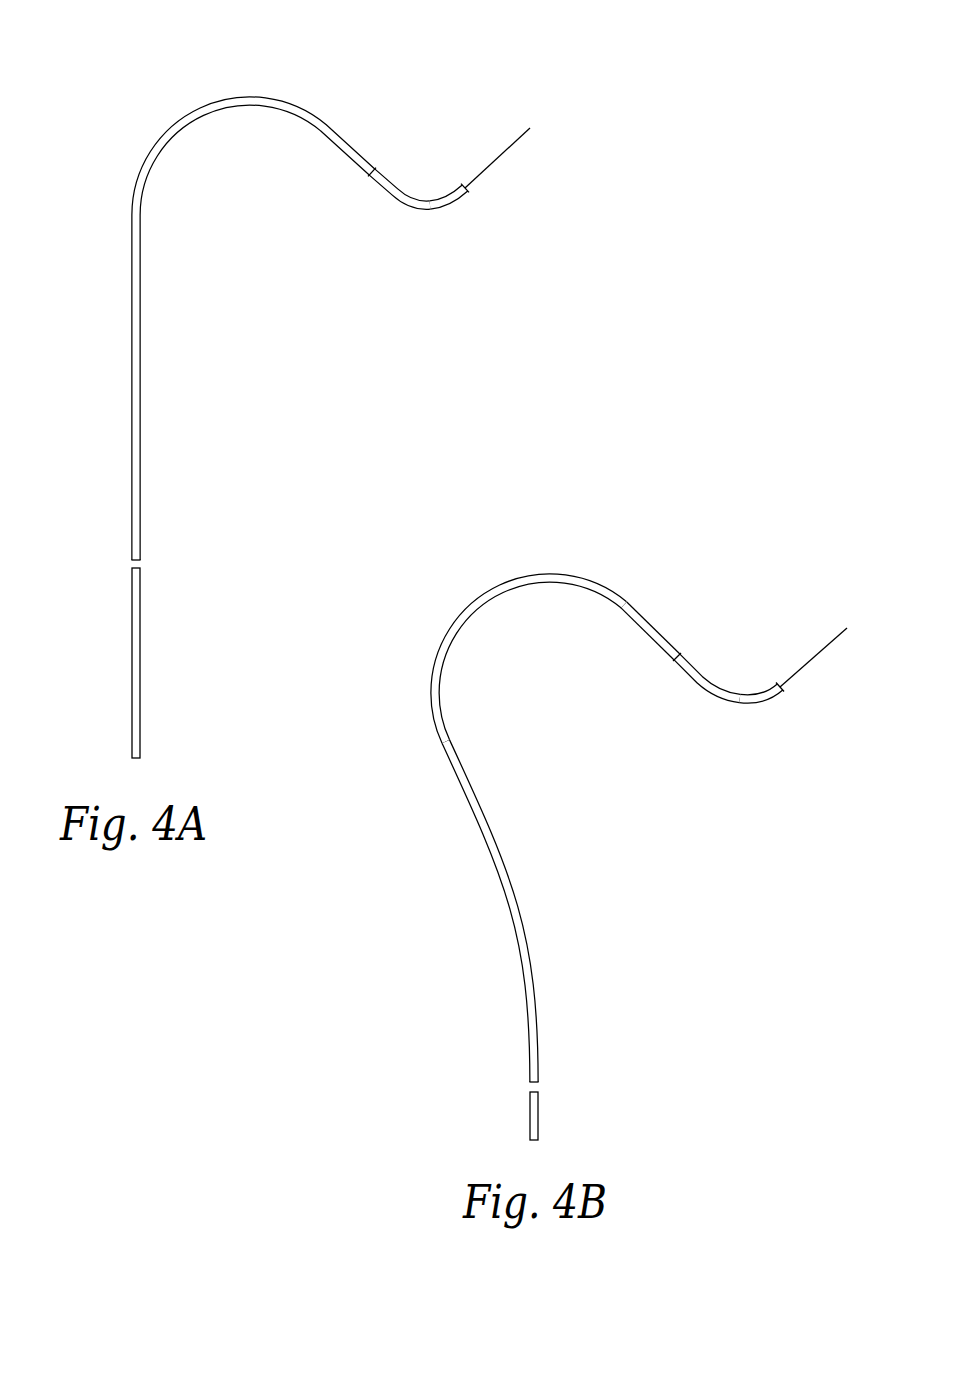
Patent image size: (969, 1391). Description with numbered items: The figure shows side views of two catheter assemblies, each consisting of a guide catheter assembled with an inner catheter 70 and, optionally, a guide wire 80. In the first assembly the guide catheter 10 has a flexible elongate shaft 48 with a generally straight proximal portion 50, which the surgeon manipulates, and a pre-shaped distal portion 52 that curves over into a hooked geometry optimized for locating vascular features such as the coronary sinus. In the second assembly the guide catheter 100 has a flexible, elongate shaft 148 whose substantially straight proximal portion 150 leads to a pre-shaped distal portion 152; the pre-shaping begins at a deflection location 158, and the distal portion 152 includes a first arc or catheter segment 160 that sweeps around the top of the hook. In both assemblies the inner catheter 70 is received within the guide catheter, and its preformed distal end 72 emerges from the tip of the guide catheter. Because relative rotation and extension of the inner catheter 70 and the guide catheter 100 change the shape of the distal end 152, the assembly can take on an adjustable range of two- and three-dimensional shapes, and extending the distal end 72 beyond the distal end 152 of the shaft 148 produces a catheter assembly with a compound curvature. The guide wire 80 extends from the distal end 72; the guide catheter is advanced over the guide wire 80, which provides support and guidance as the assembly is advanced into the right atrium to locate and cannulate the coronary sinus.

In FIG. 4A, the catheter 10 is at (282, 384).
In FIG. 4A, the flexible elongate shaft 48 is at (88, 387).
In FIG. 4A, the proximal portion 50 is at (131, 651).
In FIG. 4A, the distal portion 52 is at (131, 319).
In FIG. 4A, the inner catheter 70 is at (410, 206).
In FIG. 4B, the inner catheter 70 is at (722, 704).
In FIG. 4A, the preformed distal end 72 is at (452, 206).
In FIG. 4B, the preformed distal end 72 is at (766, 704).
In FIG. 4A, the guide wire 80 is at (500, 158).
In FIG. 4B, the guide wire 80 is at (816, 658).
In FIG. 4B, the catheter 100 is at (596, 813).
In FIG. 4B, the flexible elongate shaft 148 is at (457, 887).
In FIG. 4B, the proximal portion 150 is at (530, 1115).
In FIG. 4B, the distal portion 152 is at (493, 850).
In FIG. 4B, the deflection location 158 is at (435, 727).
In FIG. 4B, the first arc or catheter segment 160 is at (487, 603).